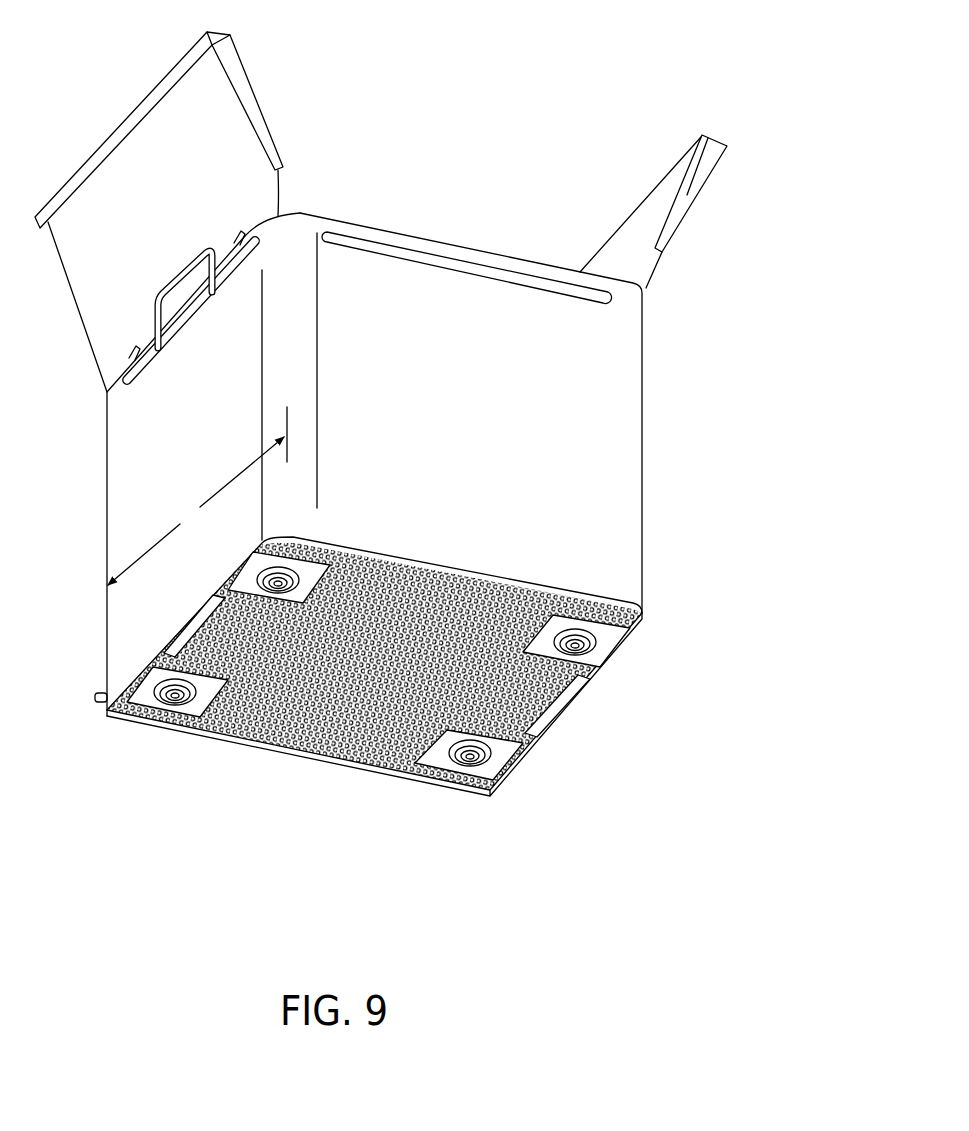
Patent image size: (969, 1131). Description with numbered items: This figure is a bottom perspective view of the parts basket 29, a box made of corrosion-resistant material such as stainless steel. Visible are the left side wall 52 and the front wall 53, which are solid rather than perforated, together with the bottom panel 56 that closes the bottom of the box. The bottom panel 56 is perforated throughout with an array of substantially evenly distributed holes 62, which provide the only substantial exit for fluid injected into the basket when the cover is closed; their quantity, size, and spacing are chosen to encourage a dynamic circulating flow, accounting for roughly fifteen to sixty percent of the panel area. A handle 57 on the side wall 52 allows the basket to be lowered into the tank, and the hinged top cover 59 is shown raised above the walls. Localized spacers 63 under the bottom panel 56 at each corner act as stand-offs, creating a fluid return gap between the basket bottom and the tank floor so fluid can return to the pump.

The parts basket 29 is at (527, 146).
The left side wall 52 is at (165, 437).
The front wall 53 is at (461, 415).
The bottom panel 56 is at (440, 597).
The handle 57 is at (190, 262).
The hinged top cover 59 is at (260, 103).
The holes 62 is at (346, 722).
The spacers 63 is at (492, 755).